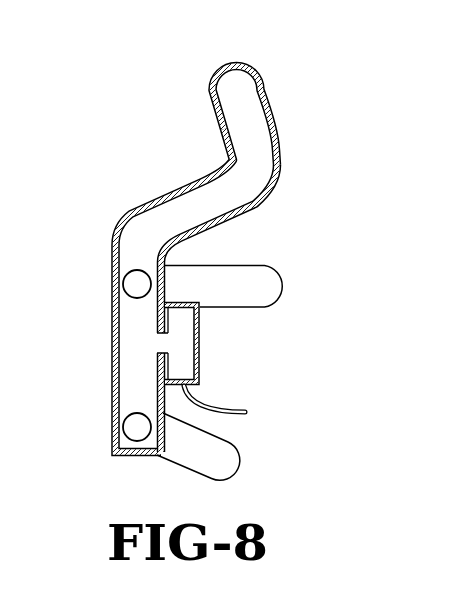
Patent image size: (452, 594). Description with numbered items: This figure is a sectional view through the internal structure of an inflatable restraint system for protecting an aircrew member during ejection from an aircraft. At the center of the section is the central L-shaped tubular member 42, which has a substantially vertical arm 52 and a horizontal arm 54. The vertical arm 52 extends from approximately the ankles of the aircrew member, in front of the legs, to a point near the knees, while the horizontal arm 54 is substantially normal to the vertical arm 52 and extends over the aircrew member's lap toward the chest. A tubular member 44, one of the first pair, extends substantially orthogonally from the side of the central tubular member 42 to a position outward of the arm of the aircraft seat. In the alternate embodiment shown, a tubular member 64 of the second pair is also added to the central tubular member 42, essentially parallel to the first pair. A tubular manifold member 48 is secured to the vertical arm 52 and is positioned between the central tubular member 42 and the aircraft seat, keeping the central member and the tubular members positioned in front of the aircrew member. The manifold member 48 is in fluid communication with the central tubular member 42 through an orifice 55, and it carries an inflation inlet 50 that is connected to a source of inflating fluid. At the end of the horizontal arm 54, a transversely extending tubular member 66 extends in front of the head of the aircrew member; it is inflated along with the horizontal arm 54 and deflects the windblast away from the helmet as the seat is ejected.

The central L-shaped tubular member 42 is at (118, 184).
The tubular member 44 is at (220, 272).
The tubular manifold member 48 is at (200, 348).
The inflation inlet 50 is at (233, 408).
The vertical arm 52 is at (112, 352).
The horizontal arm 54 is at (183, 181).
The orifice 55 is at (163, 343).
The tubular member 64 is at (212, 462).
The transversely extending tubular member 66 is at (269, 108).